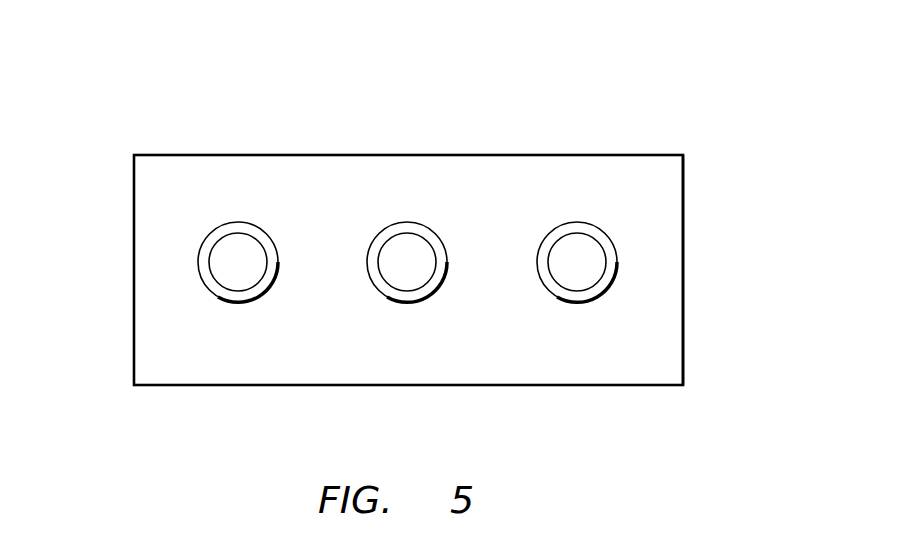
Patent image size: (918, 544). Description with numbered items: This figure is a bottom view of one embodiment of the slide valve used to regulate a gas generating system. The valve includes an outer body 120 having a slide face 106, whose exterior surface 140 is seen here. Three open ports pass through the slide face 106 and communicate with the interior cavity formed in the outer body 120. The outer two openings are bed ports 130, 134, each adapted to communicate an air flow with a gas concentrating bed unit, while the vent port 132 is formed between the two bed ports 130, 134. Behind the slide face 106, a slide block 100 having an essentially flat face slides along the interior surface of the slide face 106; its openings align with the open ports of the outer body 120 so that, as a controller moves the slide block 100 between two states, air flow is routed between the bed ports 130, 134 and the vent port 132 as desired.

The slide block 100 is at (670, 90).
The slide face 106 is at (428, 196).
The outer body 120 is at (133, 238).
The bed port 130 is at (237, 302).
The vent port 132 is at (408, 302).
The bed port 134 is at (580, 302).
The exterior surface 140 is at (657, 223).